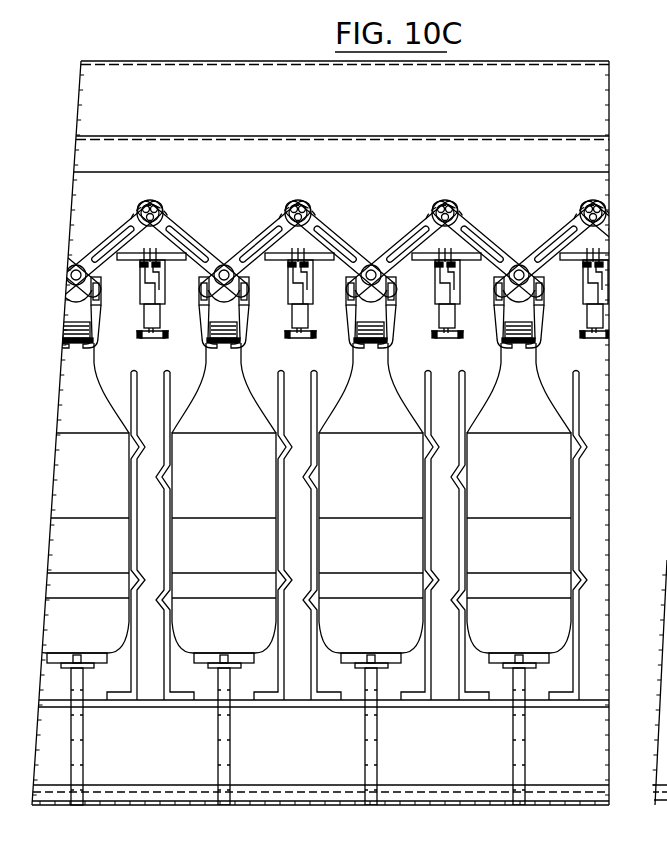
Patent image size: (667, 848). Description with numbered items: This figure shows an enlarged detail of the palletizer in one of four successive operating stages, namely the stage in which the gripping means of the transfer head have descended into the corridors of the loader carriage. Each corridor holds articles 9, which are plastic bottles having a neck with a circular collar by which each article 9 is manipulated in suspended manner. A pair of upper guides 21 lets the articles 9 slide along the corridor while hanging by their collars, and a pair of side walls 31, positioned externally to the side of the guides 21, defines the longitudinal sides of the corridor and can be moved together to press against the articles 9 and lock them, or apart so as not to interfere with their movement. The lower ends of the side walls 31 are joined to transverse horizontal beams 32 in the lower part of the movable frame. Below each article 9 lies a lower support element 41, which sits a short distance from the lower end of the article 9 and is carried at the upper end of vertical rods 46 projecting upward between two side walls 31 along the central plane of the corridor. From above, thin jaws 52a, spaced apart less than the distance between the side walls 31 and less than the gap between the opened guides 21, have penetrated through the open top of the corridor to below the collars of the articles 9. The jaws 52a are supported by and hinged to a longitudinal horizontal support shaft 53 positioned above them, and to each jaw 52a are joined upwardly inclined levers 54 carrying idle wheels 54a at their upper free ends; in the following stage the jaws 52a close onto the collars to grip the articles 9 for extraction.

The article 9 is at (256, 384).
The upper guide 21 is at (140, 298).
The side wall 31 is at (173, 637).
The transverse horizontal beam 32 is at (583, 742).
The lower support element 41 is at (202, 662).
The vertical rod 46 is at (84, 727).
The jaw 52a is at (488, 345).
The support shaft 53 is at (512, 268).
The lever 54 is at (332, 225).
The idle wheel 54a is at (462, 203).